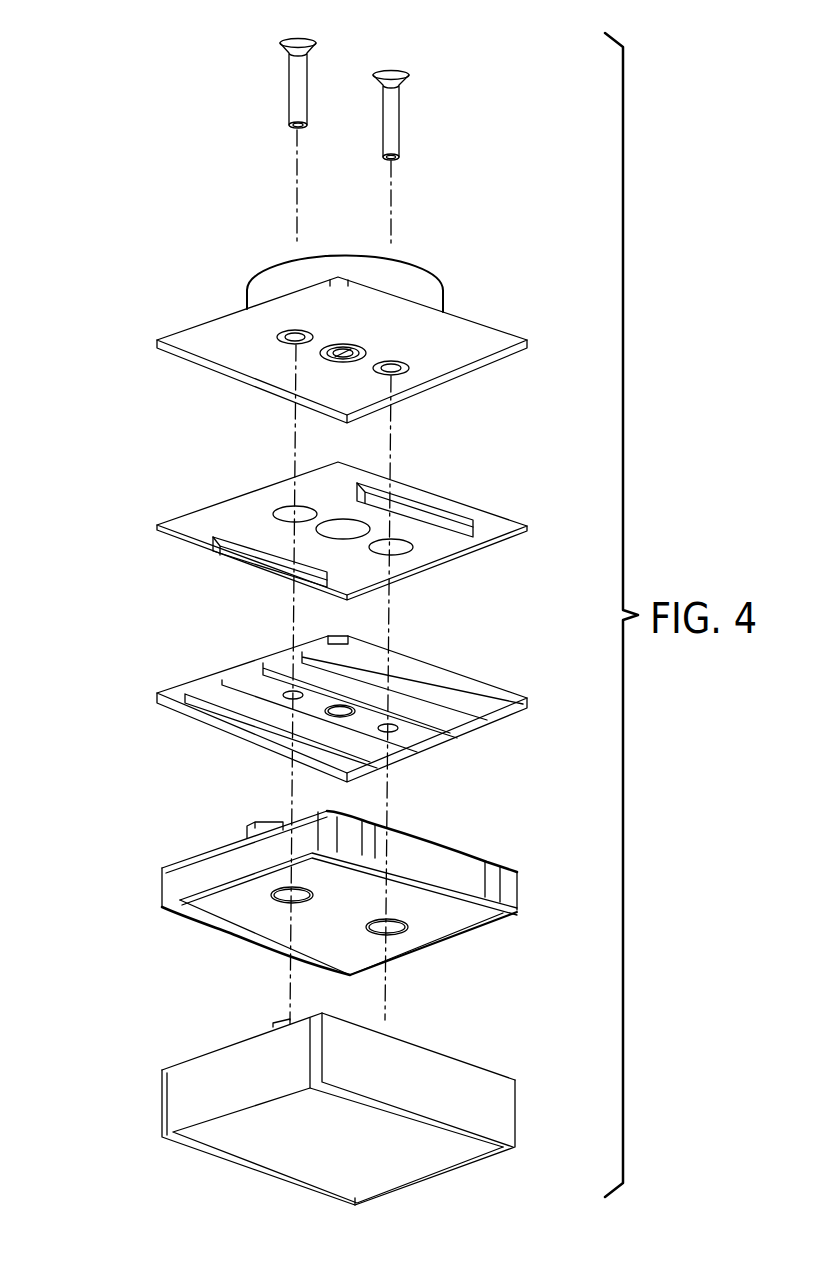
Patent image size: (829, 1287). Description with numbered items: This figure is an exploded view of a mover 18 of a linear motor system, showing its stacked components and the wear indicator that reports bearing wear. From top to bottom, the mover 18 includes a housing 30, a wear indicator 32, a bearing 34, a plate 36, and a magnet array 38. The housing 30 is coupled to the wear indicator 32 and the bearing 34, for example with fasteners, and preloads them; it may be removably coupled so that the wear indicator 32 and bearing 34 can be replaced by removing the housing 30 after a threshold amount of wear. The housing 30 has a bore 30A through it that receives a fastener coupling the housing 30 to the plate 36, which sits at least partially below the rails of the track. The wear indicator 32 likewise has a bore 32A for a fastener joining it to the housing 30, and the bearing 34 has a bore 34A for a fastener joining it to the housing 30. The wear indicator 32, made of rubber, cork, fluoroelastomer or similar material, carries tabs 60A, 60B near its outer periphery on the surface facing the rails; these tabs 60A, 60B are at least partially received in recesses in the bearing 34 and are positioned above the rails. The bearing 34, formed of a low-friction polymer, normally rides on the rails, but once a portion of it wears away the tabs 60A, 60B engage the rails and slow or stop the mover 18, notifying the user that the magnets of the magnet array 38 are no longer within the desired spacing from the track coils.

The mover 18 is at (97, 418).
The housing 30 is at (377, 339).
The bore 30A is at (340, 356).
The wear indicator 32 is at (373, 532).
The bore 32A is at (328, 537).
The bearing 34 is at (377, 713).
The bore 34A is at (343, 715).
The plate 36 is at (518, 888).
The magnet array 38 is at (514, 1106).
The tab 60A is at (248, 552).
The tab 60B is at (422, 508).